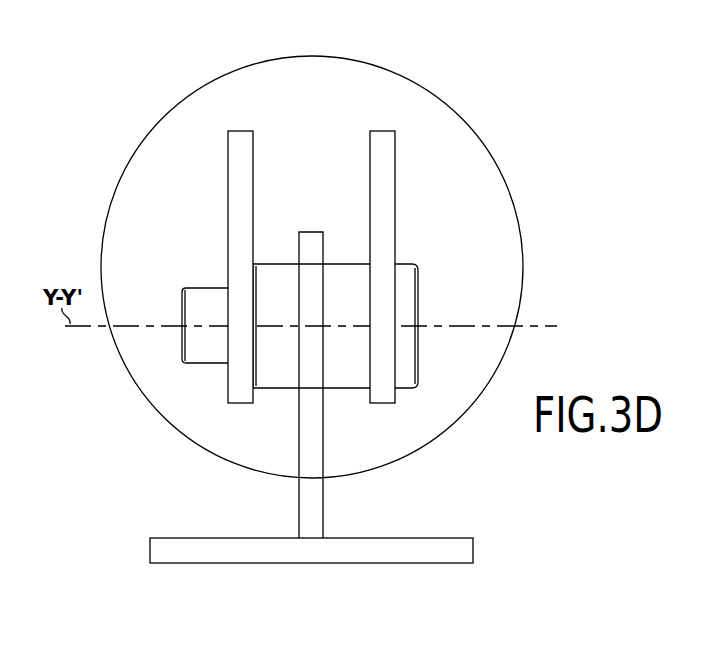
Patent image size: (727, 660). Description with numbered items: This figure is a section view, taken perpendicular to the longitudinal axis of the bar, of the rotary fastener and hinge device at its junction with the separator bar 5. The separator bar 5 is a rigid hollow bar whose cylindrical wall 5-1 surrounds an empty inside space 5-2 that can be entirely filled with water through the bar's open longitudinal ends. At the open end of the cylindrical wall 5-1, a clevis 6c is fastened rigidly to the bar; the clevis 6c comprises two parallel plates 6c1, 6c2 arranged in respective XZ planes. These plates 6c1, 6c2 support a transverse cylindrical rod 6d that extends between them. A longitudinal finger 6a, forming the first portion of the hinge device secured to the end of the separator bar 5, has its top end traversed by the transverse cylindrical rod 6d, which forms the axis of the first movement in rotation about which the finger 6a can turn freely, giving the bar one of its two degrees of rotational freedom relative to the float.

The separator bar 5 is at (571, 221).
The cylindrical wall 5-1 is at (521, 242).
The empty inside space 5-2 is at (488, 288).
The finger 6a is at (315, 446).
The clevis 6c is at (436, 37).
The plate 6c1 is at (383, 140).
The plate 6c2 is at (242, 140).
The transverse cylindrical rod 6d is at (198, 352).